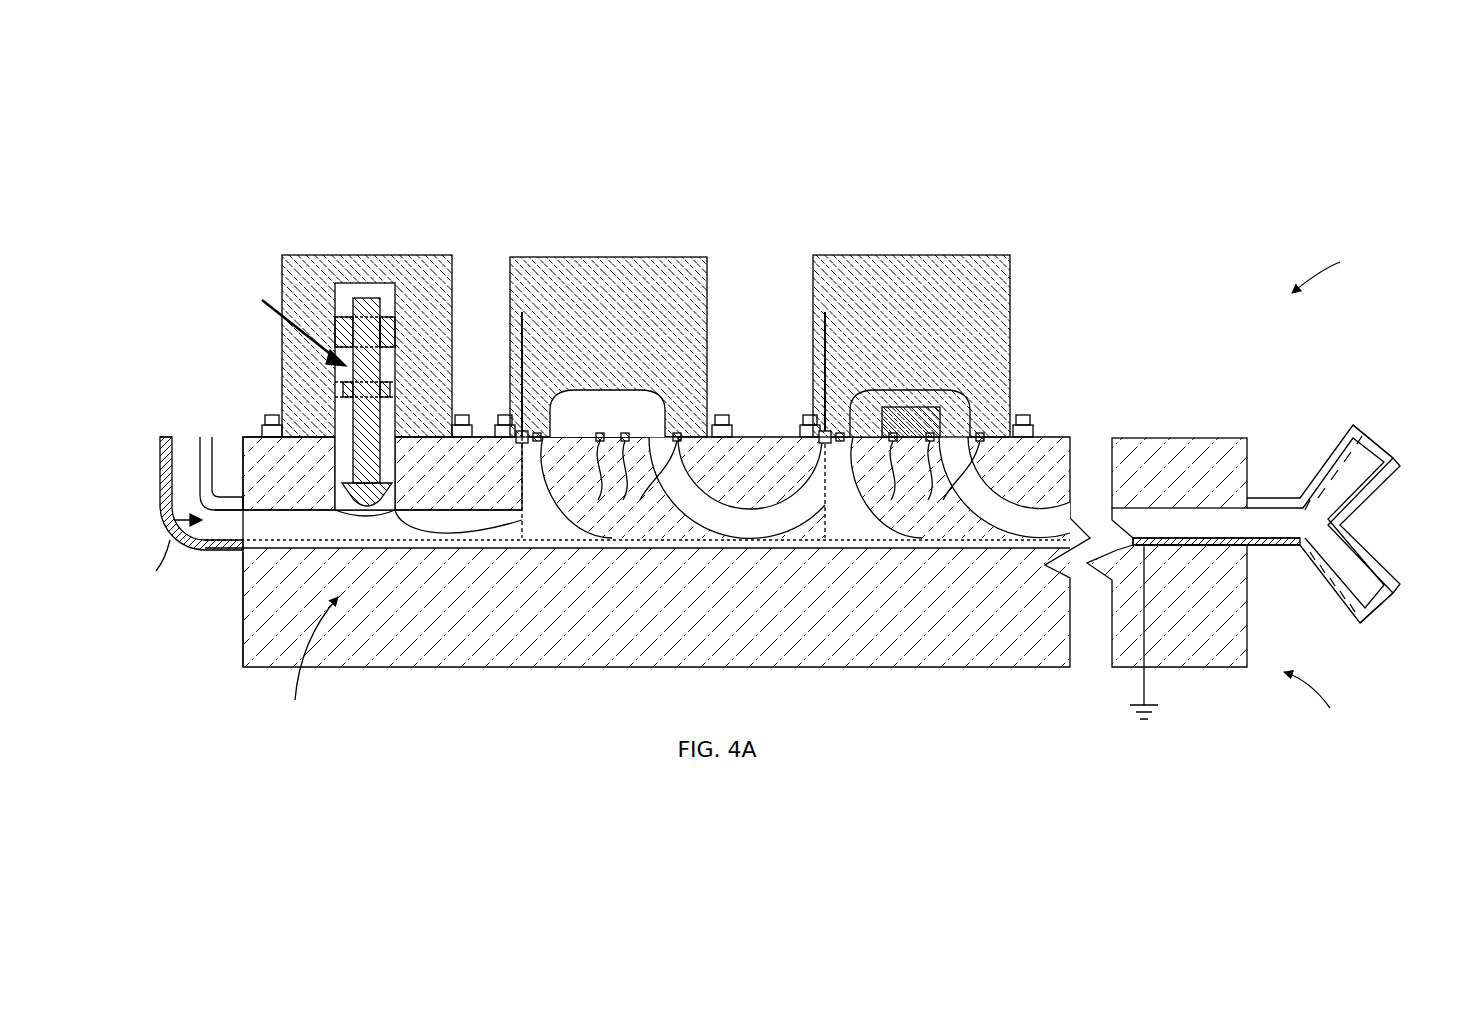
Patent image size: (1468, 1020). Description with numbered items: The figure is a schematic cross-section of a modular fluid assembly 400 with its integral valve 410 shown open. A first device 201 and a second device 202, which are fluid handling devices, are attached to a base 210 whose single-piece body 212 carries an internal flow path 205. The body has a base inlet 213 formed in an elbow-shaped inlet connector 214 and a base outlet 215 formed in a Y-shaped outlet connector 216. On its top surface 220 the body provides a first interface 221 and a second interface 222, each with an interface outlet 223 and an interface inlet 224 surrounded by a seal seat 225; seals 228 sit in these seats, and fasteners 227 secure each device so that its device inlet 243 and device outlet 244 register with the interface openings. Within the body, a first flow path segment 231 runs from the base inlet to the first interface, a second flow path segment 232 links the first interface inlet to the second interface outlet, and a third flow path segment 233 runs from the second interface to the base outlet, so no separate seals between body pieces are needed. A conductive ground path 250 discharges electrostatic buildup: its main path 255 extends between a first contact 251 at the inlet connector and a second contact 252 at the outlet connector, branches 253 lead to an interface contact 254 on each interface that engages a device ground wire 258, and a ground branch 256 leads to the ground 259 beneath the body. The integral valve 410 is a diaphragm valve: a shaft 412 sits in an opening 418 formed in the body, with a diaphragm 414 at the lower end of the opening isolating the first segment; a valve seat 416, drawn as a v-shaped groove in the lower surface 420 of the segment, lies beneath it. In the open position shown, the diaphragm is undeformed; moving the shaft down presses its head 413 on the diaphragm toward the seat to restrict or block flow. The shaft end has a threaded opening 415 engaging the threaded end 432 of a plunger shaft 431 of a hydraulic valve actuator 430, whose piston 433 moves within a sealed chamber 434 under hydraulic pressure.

The first device 201 is at (554, 257).
The second device 202 is at (857, 255).
The flow path 205 is at (175, 522).
The base 210 is at (1320, 702).
The single-piece body 212 is at (1190, 667).
The base inlet 213 is at (165, 437).
The inlet connector 214 is at (160, 490).
The base outlet 215 is at (1380, 432).
The outlet connector 216 is at (1398, 535).
The top surface 220 is at (243, 440).
The first interface 221 is at (698, 435).
The second interface 222 is at (1010, 345).
The interface outlet 223 is at (540, 433).
The interface inlet 224 is at (680, 433).
The seal seat 225 is at (761, 479).
The fastener 227 is at (505, 415).
The seals 228 is at (520, 430).
The first flow path segment 231 is at (268, 536).
The second flow path segment 232 is at (741, 532).
The third flow path segment 233 is at (1027, 532).
The device inlet 243 is at (577, 393).
The device outlet 244 is at (610, 407).
The ground path 250 is at (236, 634).
The first contact 251 is at (163, 445).
The second contact 252 is at (1364, 625).
The branches 253 is at (520, 495).
The interface contact 254 is at (520, 442).
The main path 255 is at (243, 575).
The ground branch 256 is at (1140, 690).
The ground wire 258 is at (522, 312).
The ground 259 is at (1150, 715).
The modular fluid assembly 400 is at (343, 392).
The integral valve 410 is at (281, 323).
The shaft 412 is at (405, 447).
The head 413 is at (410, 462).
The diaphragm 414 is at (450, 522).
The threaded opening 415 is at (355, 392).
The valve seat 416 is at (385, 542).
The opening 418 is at (312, 468).
The lower surface 420 is at (312, 560).
The valve actuator 430 is at (282, 270).
The plunger shaft 431 is at (365, 298).
The threaded end 432 is at (392, 355).
The piston 433 is at (387, 330).
The sealed chamber 434 is at (345, 292).